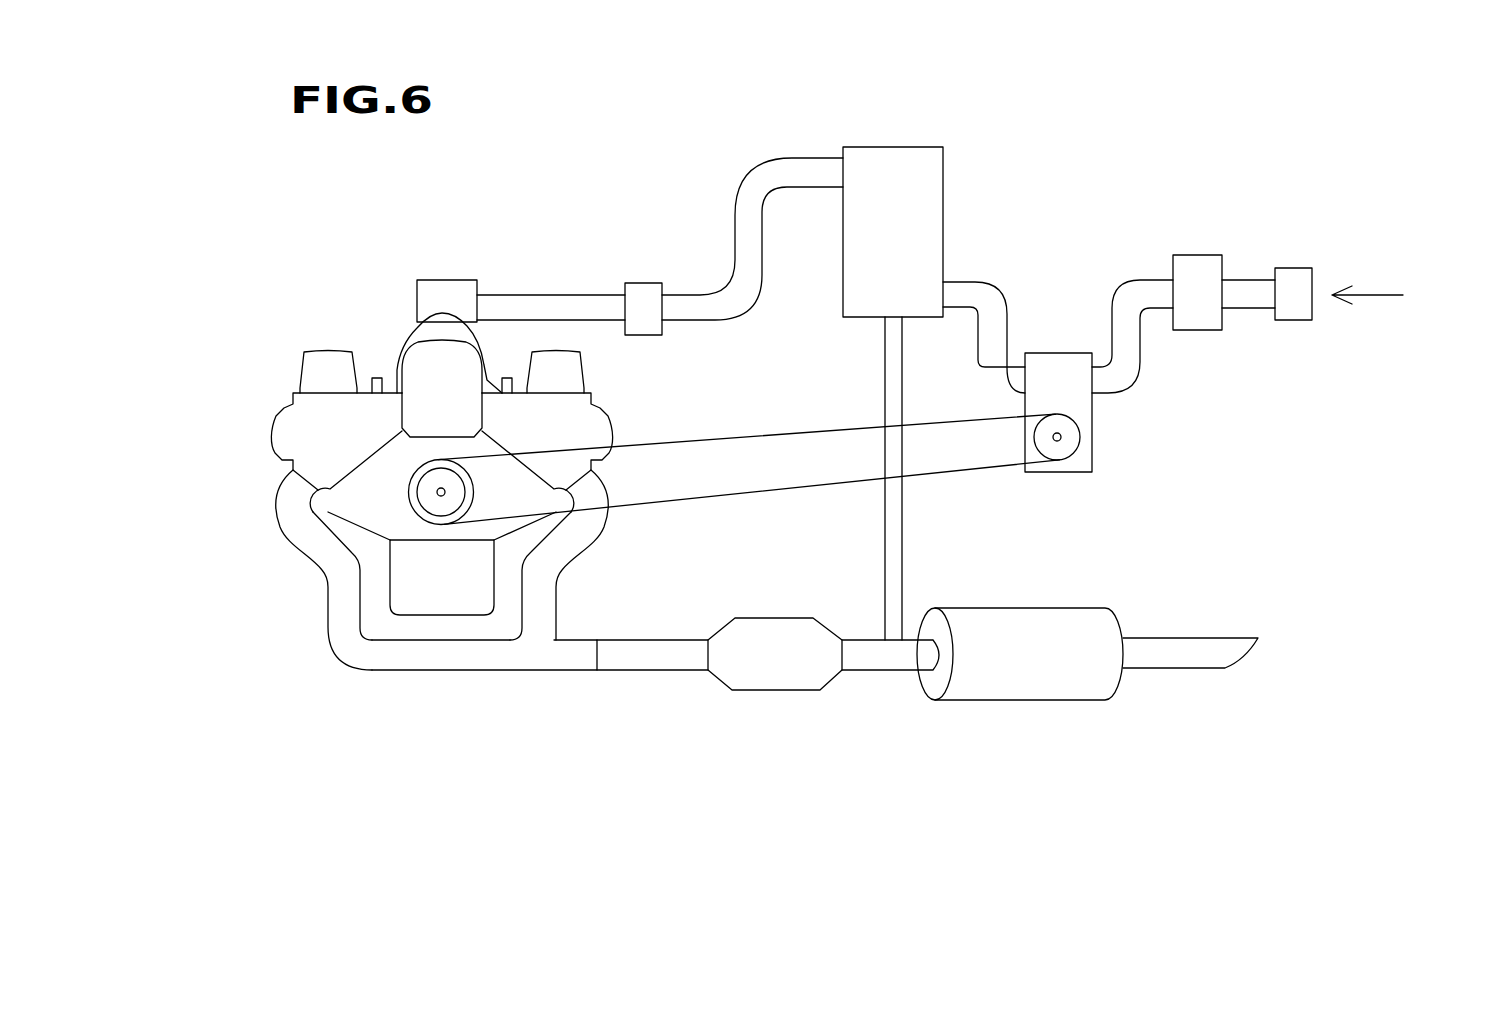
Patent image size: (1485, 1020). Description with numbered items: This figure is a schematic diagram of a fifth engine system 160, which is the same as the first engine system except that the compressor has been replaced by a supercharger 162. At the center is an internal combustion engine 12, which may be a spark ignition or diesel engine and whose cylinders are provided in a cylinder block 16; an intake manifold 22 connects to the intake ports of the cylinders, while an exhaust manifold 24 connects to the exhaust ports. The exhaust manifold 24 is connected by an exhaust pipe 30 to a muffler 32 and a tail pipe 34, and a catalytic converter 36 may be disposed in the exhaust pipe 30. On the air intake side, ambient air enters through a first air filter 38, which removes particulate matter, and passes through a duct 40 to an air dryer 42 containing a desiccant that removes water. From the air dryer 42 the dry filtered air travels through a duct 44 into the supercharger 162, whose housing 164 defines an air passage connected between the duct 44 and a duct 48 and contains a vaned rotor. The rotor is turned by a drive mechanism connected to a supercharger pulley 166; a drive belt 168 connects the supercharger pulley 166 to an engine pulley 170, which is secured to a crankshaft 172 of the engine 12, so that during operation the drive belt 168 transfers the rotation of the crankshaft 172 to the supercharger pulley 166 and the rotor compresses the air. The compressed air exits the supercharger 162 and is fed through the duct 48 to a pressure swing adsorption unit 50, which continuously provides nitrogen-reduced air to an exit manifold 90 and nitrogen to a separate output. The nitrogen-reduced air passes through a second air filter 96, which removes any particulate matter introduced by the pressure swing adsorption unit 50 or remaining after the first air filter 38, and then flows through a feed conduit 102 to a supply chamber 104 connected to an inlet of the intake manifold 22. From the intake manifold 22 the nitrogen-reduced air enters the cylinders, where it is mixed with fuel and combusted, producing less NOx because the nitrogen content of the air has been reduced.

The internal combustion engine 12 is at (477, 467).
The cylinder block 16 is at (372, 497).
The intake manifold 22 is at (417, 330).
The exhaust manifold 24 is at (468, 658).
The exhaust pipe 30 is at (643, 660).
The muffler 32 is at (1022, 688).
The tail pipe 34 is at (1173, 660).
The catalytic converter 36 is at (797, 637).
The first air filter 38 is at (1290, 277).
The duct 40 is at (1238, 308).
The air dryer 42 is at (1192, 265).
The duct 44 is at (1140, 350).
The duct 48 is at (973, 270).
The pressure swing adsorption unit 50 is at (887, 167).
The exit manifold 90 is at (780, 167).
The second air filter 96 is at (645, 293).
The feed conduit 102 is at (547, 296).
The supply chamber 104 is at (442, 288).
The fifth engine system 160 is at (946, 335).
The supercharger 162 is at (1107, 423).
The housing 164 is at (1060, 365).
The supercharger pulley 166 is at (1075, 435).
The drive belt 168 is at (773, 432).
The engine pulley 170 is at (413, 465).
The crankshaft 172 is at (441, 492).